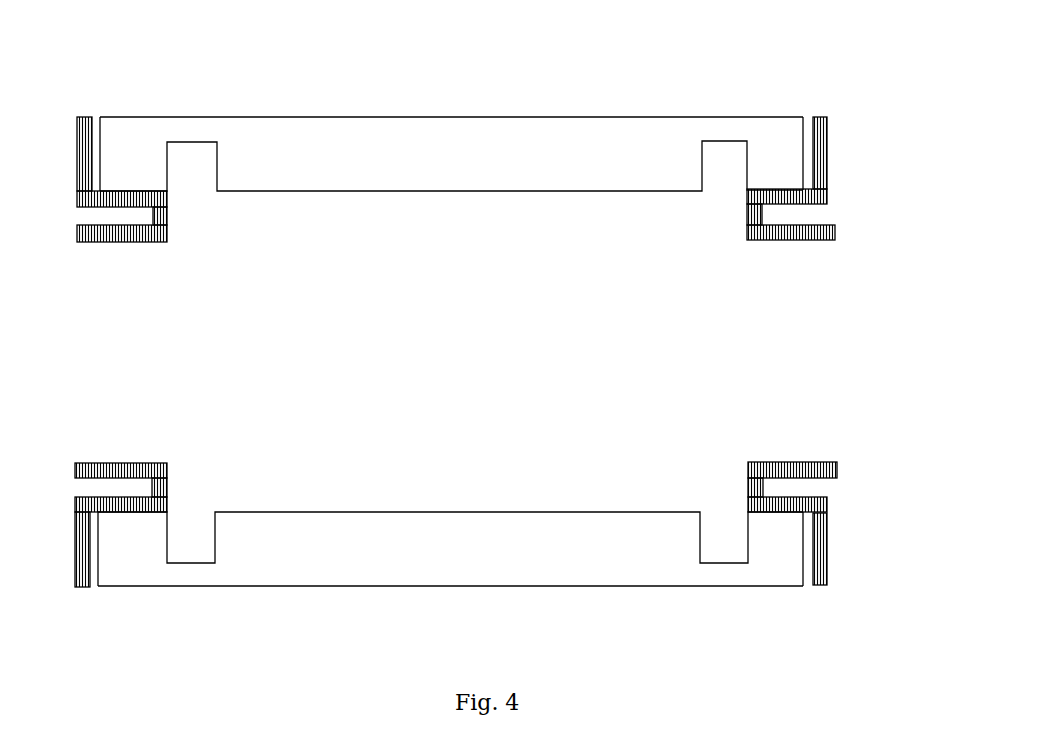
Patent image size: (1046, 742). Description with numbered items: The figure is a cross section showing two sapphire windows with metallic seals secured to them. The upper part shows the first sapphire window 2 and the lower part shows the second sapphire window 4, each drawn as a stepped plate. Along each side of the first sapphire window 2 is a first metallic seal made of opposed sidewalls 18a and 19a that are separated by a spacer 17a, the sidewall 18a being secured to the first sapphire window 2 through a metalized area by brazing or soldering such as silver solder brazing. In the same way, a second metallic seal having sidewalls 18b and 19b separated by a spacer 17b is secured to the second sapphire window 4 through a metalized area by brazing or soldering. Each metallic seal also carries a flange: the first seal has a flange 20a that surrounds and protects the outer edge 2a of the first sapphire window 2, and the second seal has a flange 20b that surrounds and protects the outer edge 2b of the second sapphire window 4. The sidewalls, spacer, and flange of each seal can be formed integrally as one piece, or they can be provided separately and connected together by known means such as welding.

The first sapphire window 2 is at (451, 154).
The second sapphire window 4 is at (450, 549).
The outer edge of first sapphire window 2a is at (98, 117).
The outer edge of second sapphire window 2b is at (803, 577).
The spacer 17a is at (457, 259).
The spacer 17b is at (160, 492).
The sidewall 18a is at (456, 288).
The sidewall 18b is at (118, 463).
The sidewall 19a is at (460, 233).
The sidewall 19b is at (498, 466).
The flange 20a is at (76, 130).
The flange 20b is at (72, 570).